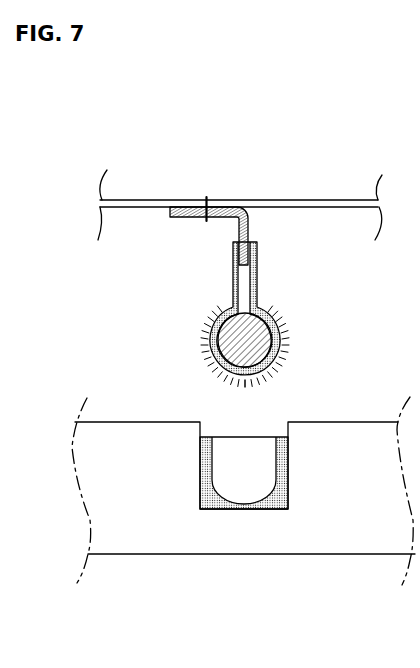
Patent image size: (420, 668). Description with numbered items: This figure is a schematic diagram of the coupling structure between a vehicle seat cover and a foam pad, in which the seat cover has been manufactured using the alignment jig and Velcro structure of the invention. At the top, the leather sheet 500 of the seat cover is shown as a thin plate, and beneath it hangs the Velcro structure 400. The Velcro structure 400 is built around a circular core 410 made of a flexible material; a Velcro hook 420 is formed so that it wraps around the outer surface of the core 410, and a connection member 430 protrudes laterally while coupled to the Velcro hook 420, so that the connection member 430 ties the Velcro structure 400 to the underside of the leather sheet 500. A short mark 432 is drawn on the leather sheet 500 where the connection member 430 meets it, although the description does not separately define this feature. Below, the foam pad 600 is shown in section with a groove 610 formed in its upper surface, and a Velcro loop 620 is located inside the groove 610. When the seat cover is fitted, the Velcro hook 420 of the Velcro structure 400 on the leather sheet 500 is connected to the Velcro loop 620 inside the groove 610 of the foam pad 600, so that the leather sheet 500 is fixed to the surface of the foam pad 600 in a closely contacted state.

The Velcro structure 400 is at (240, 315).
The circular core 410 is at (255, 335).
The Velcro hook 420 is at (258, 302).
The connection member 430 is at (250, 222).
The joint portion 432 is at (207, 198).
The leather sheet 500 is at (293, 200).
The foam pad 600 is at (243, 517).
The groove 610 is at (288, 462).
The Velcro loop 620 is at (244, 553).